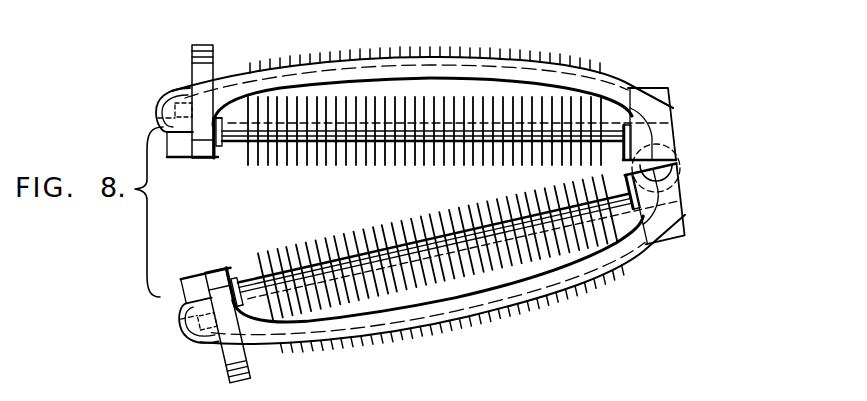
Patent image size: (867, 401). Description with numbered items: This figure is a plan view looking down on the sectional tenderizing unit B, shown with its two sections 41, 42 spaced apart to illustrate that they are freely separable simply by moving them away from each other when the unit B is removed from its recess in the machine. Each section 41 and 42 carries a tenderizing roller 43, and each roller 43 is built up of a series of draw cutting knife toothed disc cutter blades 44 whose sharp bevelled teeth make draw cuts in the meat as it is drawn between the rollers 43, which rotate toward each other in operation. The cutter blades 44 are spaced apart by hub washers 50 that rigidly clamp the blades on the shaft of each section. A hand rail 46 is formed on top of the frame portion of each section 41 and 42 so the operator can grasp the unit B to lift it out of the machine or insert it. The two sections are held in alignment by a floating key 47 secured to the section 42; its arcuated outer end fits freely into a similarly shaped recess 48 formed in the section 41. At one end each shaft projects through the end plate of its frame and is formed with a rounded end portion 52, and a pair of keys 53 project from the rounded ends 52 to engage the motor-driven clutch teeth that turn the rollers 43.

The section 41 is at (232, 333).
The section 42 is at (222, 88).
The tenderizing roller 43 is at (240, 132).
The toothed disc cutter blade 44 is at (352, 162).
The hand rail 46 is at (422, 67).
The floating key 47 is at (640, 168).
The recess 48 is at (678, 180).
The hub washer 50 is at (448, 146).
The rounded end portion 52 is at (160, 100).
The key 53 is at (175, 118).
The sectional tenderizing unit B is at (667, 110).